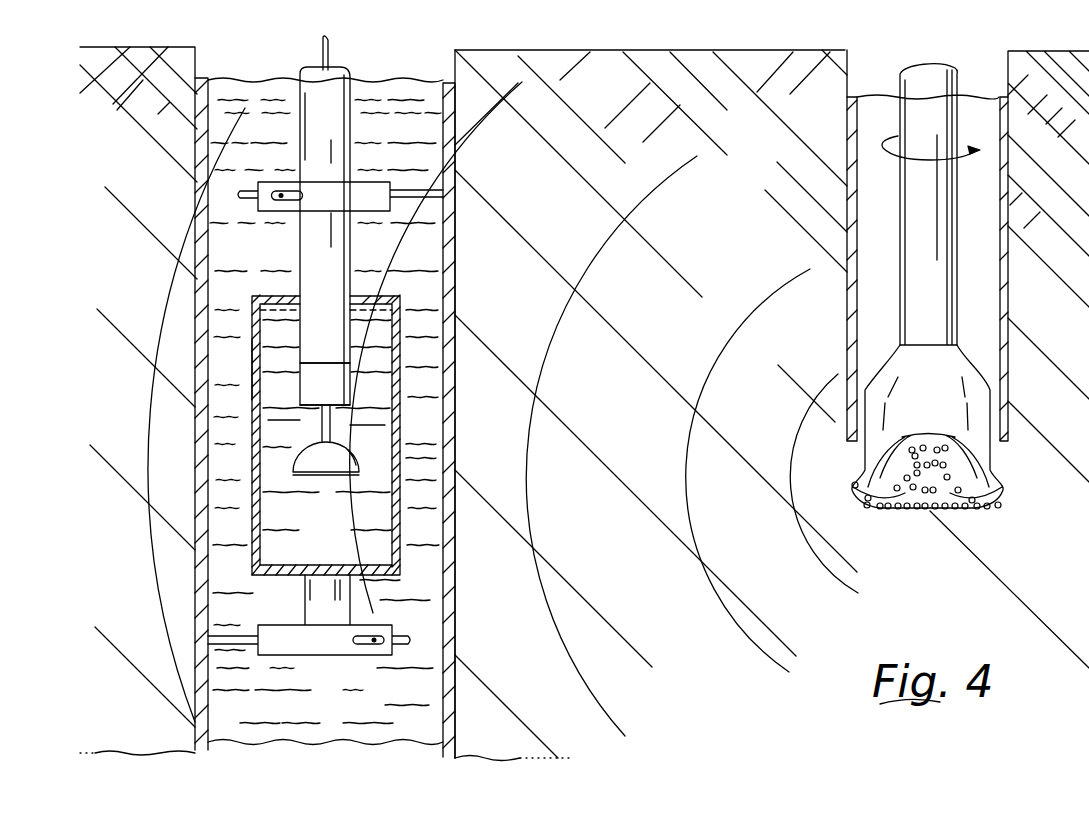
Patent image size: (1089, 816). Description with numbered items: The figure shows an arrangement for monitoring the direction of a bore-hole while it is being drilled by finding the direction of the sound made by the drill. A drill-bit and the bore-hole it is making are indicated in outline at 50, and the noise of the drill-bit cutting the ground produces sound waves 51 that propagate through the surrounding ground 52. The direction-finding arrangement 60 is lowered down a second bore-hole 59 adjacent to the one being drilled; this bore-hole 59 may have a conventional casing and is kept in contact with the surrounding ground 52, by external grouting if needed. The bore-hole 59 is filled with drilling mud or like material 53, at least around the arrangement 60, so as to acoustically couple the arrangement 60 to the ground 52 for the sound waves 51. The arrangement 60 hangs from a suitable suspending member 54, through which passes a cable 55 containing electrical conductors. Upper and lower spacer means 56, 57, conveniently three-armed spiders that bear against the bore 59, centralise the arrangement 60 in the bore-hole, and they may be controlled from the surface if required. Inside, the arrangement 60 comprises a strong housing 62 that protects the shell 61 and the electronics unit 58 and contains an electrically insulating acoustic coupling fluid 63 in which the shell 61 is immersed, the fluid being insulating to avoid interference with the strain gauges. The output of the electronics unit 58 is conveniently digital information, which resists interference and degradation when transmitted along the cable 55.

The drill-bit and bore-hole 50 is at (883, 358).
The sound waves 51 is at (536, 535).
The surrounding ground 52 is at (721, 251).
The drilling mud 53 is at (267, 258).
The suspending member 54 is at (337, 85).
The cable 55 is at (320, 43).
The spacer means 56 is at (378, 198).
The spacer means 57 is at (380, 630).
The electronics unit 58 is at (338, 394).
The bore-hole 59 is at (452, 272).
The arrangement for finding the direction of sound 60 is at (406, 381).
The shell 61 is at (349, 462).
The housing 62 is at (251, 367).
The acoustic coupling fluid 63 is at (281, 432).